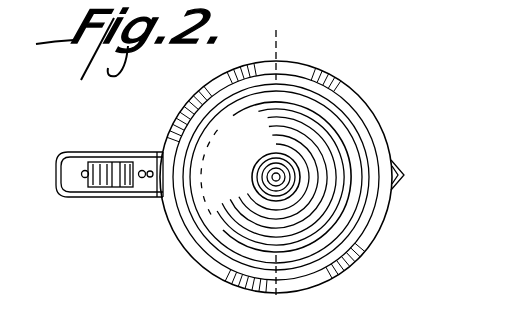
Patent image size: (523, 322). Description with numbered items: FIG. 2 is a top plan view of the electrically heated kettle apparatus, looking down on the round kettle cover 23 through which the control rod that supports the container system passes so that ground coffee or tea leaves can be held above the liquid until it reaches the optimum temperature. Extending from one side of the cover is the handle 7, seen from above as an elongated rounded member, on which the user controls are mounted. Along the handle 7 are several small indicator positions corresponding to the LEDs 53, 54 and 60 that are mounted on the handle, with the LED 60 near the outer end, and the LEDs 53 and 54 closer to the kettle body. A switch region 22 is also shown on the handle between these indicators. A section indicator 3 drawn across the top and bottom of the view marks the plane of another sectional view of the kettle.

The section line 3- 3 is at (322, 9).
The handle 7 is at (74, 196).
The switch 22 is at (111, 162).
The kettle cover 23 is at (338, 213).
The LED 53 is at (149, 170).
The LED 54 is at (143, 178).
The LED 60 is at (82, 170).